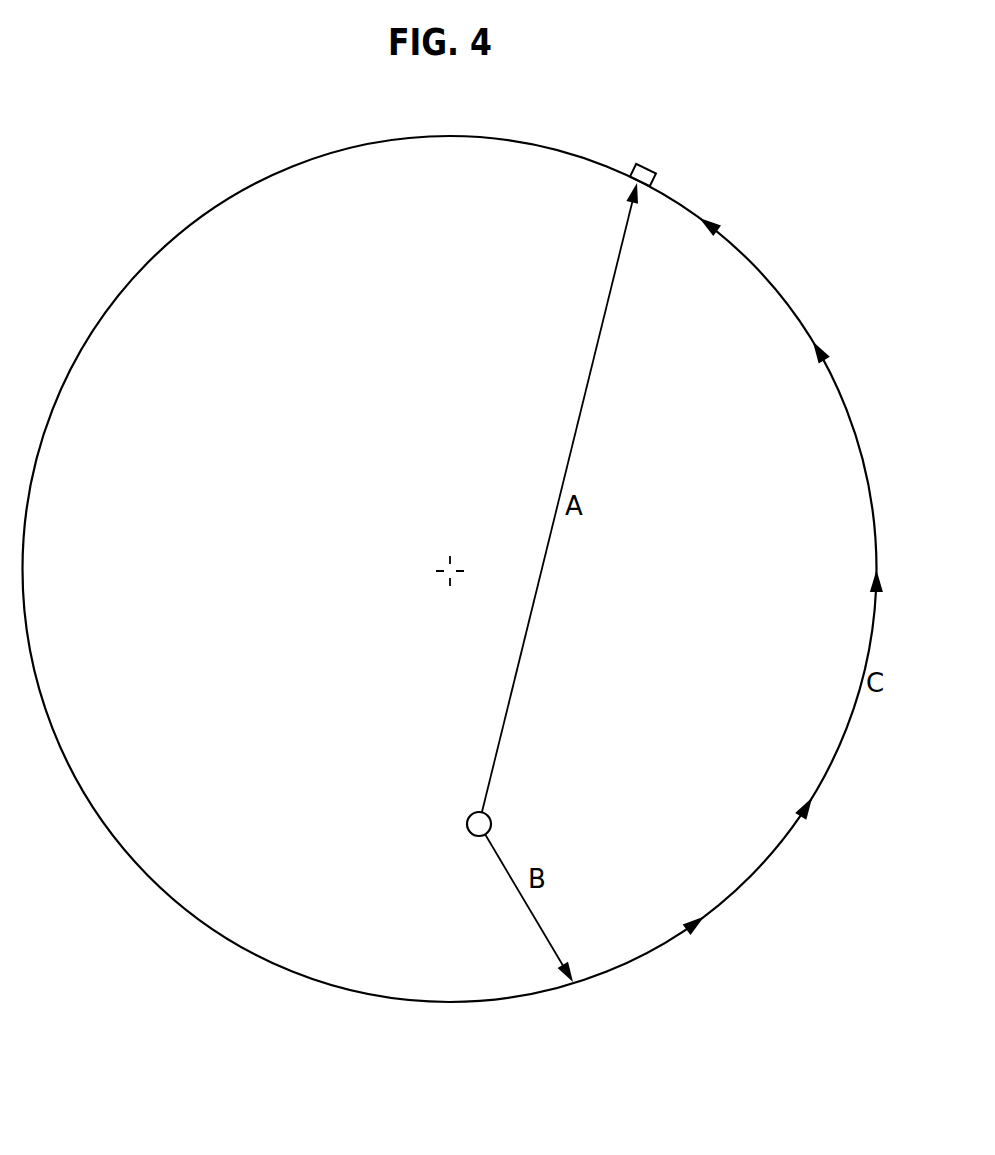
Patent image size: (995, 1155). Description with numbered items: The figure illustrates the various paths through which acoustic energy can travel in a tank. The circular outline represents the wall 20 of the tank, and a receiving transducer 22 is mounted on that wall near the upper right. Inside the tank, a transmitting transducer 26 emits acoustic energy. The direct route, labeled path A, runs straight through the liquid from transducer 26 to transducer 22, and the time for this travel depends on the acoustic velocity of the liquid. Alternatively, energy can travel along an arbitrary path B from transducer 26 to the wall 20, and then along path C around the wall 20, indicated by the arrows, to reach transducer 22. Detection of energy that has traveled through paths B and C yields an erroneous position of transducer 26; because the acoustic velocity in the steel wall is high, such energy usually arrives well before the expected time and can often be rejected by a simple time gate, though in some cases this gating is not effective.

The wall 20 is at (245, 950).
The transducer 22 is at (652, 172).
The transducer 26 is at (469, 815).